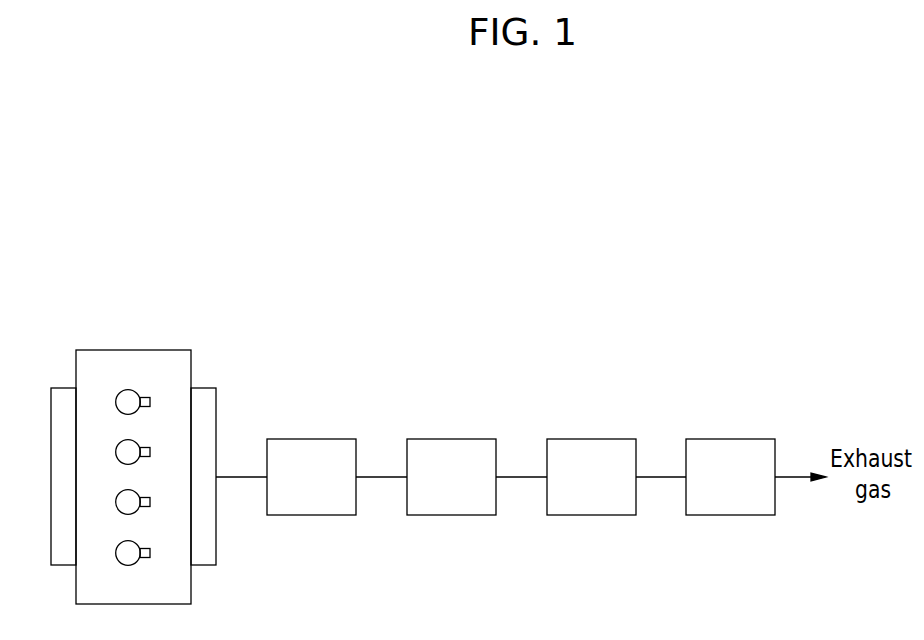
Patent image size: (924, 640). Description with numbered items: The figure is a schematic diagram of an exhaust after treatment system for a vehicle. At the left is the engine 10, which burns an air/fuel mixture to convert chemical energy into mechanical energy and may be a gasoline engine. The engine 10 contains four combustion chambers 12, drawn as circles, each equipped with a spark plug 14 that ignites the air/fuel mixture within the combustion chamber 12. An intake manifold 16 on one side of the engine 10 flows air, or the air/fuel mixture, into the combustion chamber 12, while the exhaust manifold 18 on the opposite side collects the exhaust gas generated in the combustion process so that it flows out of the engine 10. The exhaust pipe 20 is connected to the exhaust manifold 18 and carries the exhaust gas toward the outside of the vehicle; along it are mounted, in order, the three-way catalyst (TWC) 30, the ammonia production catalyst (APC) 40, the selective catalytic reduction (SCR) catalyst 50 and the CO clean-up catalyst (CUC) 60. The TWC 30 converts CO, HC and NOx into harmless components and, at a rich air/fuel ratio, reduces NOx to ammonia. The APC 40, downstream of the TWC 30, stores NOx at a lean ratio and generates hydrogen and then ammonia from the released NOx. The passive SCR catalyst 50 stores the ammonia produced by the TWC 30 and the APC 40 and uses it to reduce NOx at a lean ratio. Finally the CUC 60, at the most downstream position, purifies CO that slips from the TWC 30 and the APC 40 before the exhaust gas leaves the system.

The engine 10 is at (173, 320).
The combustion chamber 12 is at (127, 389).
The spark plug 14 is at (151, 400).
The intake manifold 16 is at (65, 388).
The exhaust manifold 18 is at (205, 388).
The exhaust pipe 20 is at (240, 479).
The three-way catalyst (TWC) 30 is at (312, 439).
The ammonia production catalyst (APC) 40 is at (451, 439).
The selective catalytic reduction (SCR) catalyst 50 is at (590, 439).
The CO clean-up catalyst (CUC) 60 is at (730, 439).